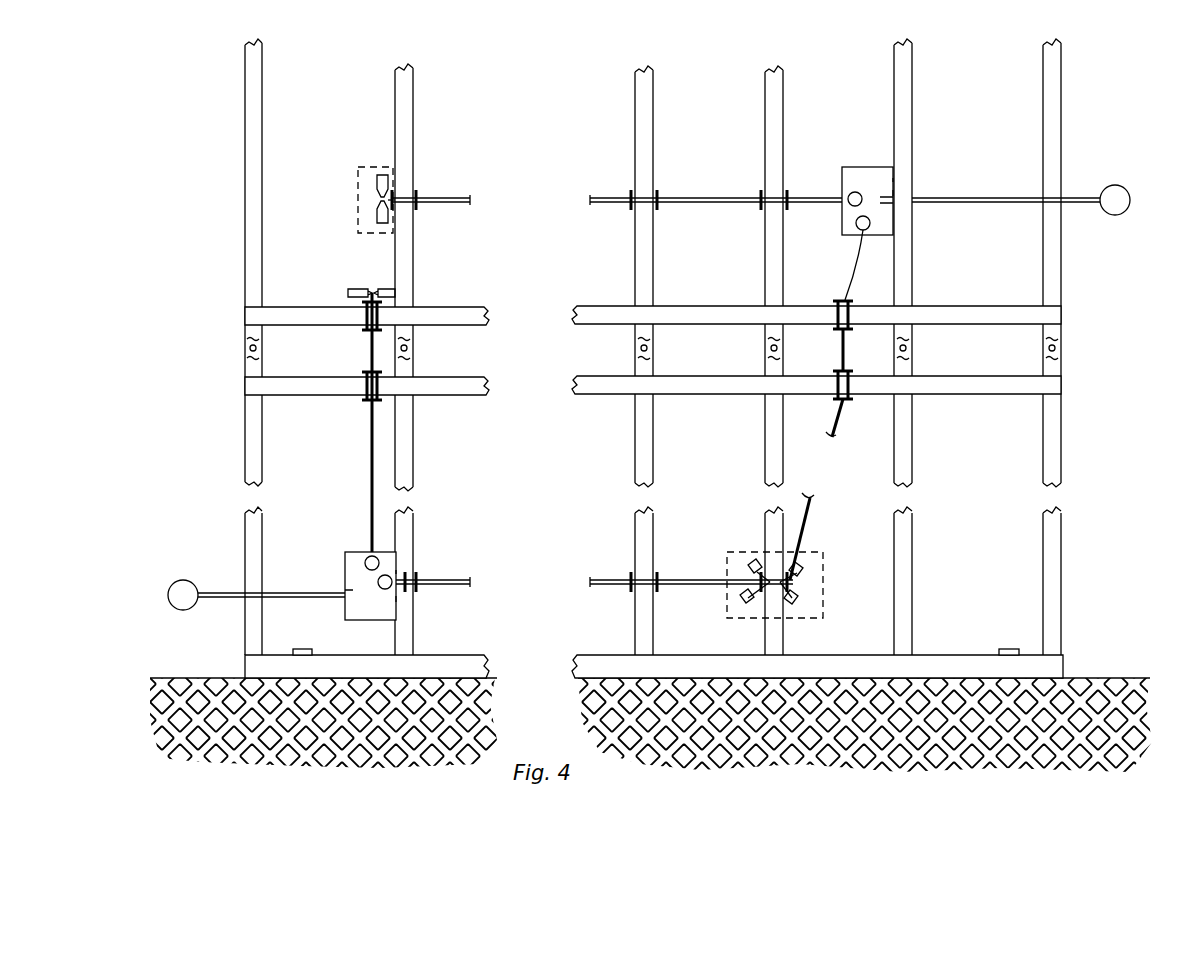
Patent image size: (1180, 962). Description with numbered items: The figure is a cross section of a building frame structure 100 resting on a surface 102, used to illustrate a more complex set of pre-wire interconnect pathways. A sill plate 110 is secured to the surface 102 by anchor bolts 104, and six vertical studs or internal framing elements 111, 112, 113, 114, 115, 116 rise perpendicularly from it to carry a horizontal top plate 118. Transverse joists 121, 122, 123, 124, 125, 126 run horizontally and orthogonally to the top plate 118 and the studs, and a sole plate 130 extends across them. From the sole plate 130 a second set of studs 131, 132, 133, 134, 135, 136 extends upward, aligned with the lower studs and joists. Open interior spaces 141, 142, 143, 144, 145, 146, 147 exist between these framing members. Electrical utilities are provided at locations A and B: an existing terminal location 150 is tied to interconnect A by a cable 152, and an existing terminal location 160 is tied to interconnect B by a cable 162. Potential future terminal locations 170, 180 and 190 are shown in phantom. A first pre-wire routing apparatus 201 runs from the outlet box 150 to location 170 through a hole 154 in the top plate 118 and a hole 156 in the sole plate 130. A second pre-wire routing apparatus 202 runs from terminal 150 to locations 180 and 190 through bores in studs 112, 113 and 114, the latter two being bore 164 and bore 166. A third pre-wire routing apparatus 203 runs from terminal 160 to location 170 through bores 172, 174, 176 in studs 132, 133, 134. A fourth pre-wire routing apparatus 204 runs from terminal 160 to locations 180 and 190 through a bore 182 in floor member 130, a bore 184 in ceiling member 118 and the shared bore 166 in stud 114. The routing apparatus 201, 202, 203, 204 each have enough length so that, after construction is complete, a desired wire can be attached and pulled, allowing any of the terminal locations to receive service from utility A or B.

The frame structure 100 is at (192, 236).
The surface 102 is at (203, 675).
The anchor bolts 104 is at (300, 650).
The sill plate 110 is at (437, 665).
The vertical stud 111 is at (258, 461).
The vertical stud 112 is at (412, 451).
The vertical stud 113 is at (648, 456).
The vertical stud 114 is at (783, 469).
The vertical stud 115 is at (905, 453).
The vertical stud 116 is at (1055, 441).
The top plate 118 is at (332, 388).
The transverse joist 121 is at (250, 348).
The transverse joist 122 is at (401, 348).
The transverse joist 123 is at (641, 348).
The transverse joist 124 is at (772, 362).
The transverse joist 125 is at (906, 350).
The transverse joist 126 is at (1055, 352).
The sole plate 130 is at (578, 305).
The second stud 131 is at (252, 104).
The second stud 132 is at (403, 89).
The second stud 133 is at (640, 92).
The second stud 134 is at (769, 91).
The second stud 135 is at (898, 89).
The second stud 136 is at (1047, 89).
The open interior space 141 is at (327, 540).
The open interior space 142 is at (530, 520).
The open interior space 143 is at (483, 363).
The open interior space 144 is at (700, 350).
The open interior space 145 is at (723, 275).
The open interior space 146 is at (833, 253).
The open interior space 147 is at (983, 247).
The terminal location 150 is at (345, 569).
The cable 152 is at (277, 592).
The hole 154 is at (364, 392).
The hole 156 is at (366, 300).
The terminal location 160 is at (872, 167).
The cable 162 is at (414, 580).
The bore 164 is at (645, 578).
The bore 166 is at (777, 595).
The potential terminal location 170 is at (362, 168).
The bore 172 is at (404, 195).
The bore 174 is at (648, 195).
The bore 176 is at (777, 195).
The potential terminal location 180 is at (753, 550).
The bore 182 is at (855, 300).
The bore 184 is at (816, 404).
The potential terminal location 190 is at (823, 556).
The first pre-wire routing apparatus 201 is at (355, 500).
The second pre-wire routing apparatus 202 is at (612, 568).
The third pre-wire routing apparatus 203 is at (612, 185).
The fourth pre-wire routing apparatus 204 is at (826, 508).